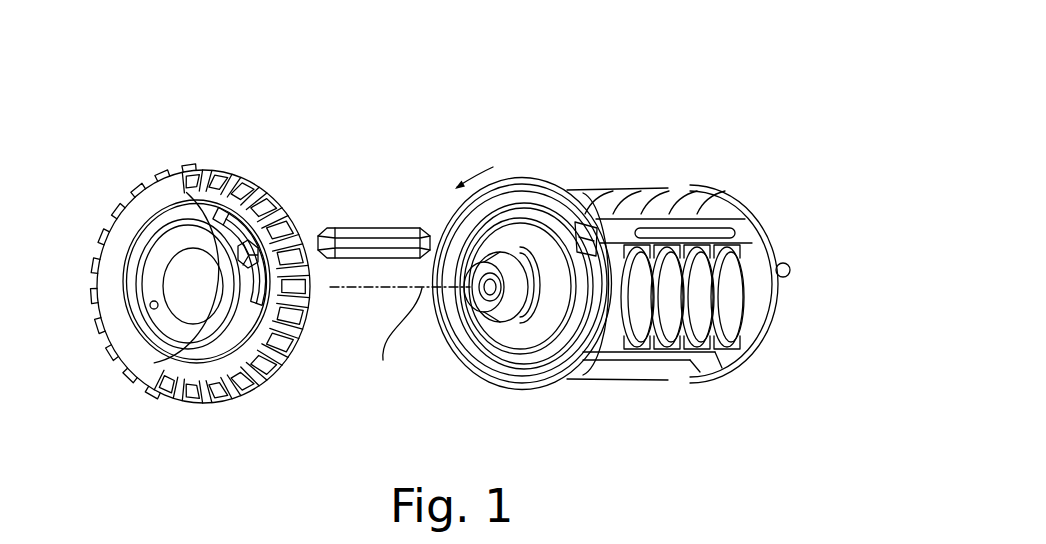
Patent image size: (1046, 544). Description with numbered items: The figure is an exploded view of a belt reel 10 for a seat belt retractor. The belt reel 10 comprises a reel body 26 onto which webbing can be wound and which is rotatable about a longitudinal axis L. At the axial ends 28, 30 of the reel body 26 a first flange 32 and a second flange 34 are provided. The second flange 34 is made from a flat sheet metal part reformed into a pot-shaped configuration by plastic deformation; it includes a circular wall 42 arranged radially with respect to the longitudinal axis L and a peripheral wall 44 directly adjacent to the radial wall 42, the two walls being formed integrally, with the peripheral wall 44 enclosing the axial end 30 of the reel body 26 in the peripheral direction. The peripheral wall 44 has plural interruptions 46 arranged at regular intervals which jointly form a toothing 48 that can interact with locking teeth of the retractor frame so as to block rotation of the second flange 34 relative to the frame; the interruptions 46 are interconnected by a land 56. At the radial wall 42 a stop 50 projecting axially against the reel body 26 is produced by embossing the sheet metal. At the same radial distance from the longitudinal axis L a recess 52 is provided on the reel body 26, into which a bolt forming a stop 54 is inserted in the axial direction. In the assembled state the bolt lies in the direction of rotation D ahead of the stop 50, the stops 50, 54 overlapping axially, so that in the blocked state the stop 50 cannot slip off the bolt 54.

The belt reel 10 is at (712, 73).
The reel body 26 is at (602, 195).
The axial end 28 is at (712, 182).
The axial end 30 is at (505, 176).
The first flange 32 is at (767, 226).
The second flange 34 is at (198, 195).
The circular wall 42 is at (147, 353).
The peripheral wall 44 is at (303, 327).
The interruptions 46 is at (267, 380).
The toothing 48 is at (256, 396).
The stop 50 is at (292, 217).
The recess 52 is at (588, 200).
The stop 54 is at (378, 235).
The land 56 is at (307, 285).